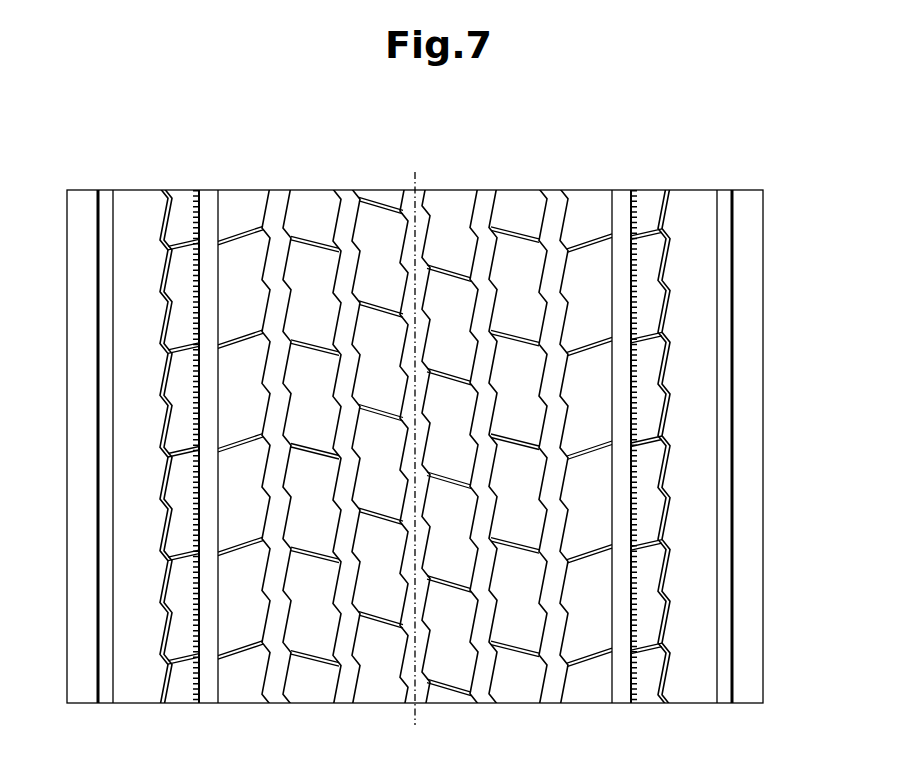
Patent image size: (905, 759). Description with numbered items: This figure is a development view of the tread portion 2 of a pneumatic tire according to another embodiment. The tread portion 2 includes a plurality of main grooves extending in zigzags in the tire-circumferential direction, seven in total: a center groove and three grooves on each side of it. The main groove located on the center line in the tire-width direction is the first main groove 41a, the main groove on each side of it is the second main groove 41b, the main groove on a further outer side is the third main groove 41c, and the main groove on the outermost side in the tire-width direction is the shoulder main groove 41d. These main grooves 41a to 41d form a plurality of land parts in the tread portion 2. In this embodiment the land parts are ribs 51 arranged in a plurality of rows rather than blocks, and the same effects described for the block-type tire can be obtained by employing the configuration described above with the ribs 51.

The tread portion 2 is at (245, 174).
The first main groove 41a is at (413, 188).
The second main groove 41b is at (485, 188).
The third main groove 41c is at (552, 188).
The shoulder main groove 41d is at (620, 188).
The rib 51 is at (375, 225).